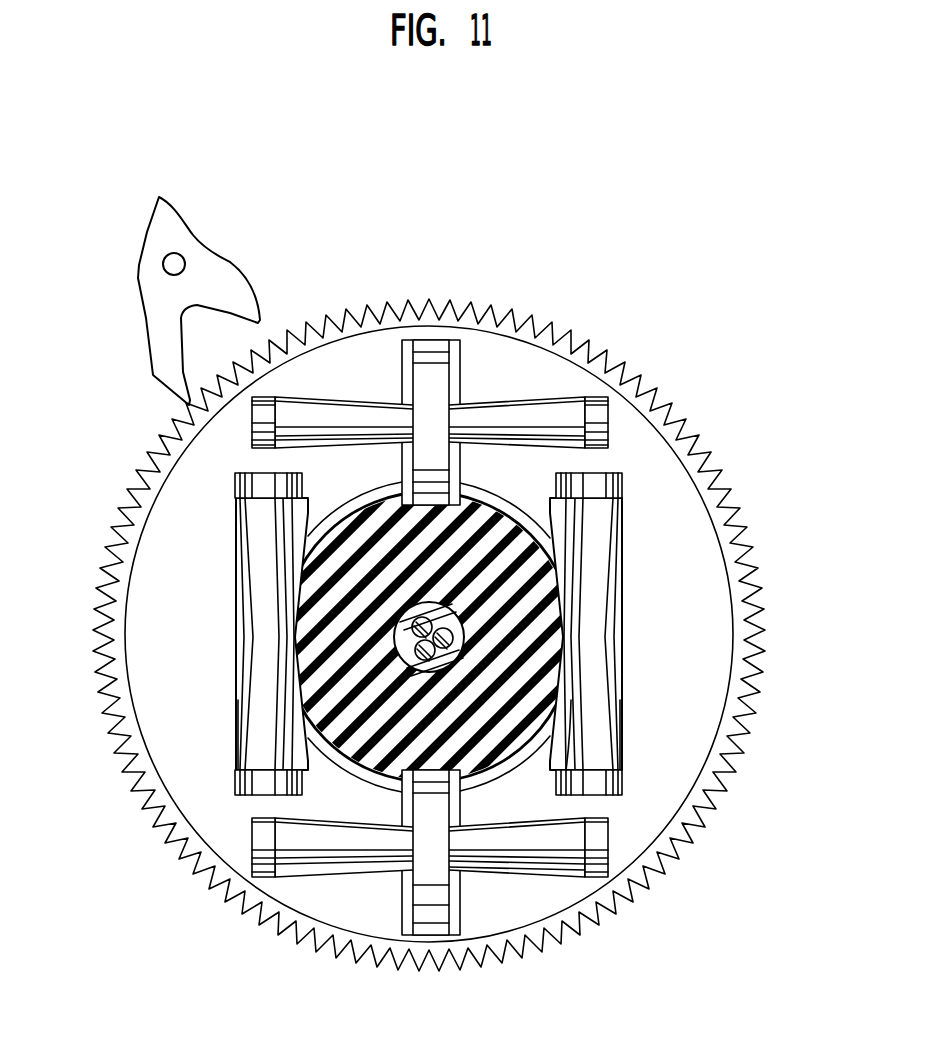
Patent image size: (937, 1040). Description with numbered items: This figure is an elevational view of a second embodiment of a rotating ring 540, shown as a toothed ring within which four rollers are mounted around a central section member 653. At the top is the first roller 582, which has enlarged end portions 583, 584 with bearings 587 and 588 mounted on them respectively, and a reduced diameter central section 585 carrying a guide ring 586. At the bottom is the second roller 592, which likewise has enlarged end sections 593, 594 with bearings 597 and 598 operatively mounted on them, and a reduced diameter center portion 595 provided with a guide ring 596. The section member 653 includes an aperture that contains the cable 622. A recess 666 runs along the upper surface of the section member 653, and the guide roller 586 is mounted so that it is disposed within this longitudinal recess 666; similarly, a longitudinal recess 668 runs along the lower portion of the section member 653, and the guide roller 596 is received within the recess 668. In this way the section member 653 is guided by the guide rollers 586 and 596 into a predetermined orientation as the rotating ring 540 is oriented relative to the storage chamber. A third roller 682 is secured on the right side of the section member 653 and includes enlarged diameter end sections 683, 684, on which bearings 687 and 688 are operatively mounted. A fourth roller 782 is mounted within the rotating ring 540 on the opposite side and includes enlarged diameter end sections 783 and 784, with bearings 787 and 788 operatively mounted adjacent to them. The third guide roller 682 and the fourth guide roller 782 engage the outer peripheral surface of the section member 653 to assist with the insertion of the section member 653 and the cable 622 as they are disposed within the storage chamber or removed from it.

The rotating ring 540 is at (715, 643).
The first roller 582 is at (504, 377).
The enlarged end portion 583 is at (671, 401).
The enlarged end portion 584 is at (296, 415).
The reduced diameter central section 585 is at (482, 416).
The guide ring 586 is at (443, 342).
The bearing 587 is at (608, 437).
The bearing 588 is at (265, 407).
The second roller 592 is at (287, 860).
The enlarged end section 593 is at (567, 856).
The enlarged end section 594 is at (416, 892).
The reduced diameter center portion 595 is at (463, 852).
The guide ring 596 is at (423, 920).
The bearing 597 is at (607, 866).
The bearing 598 is at (254, 867).
The cable 622 is at (462, 655).
The section member 653 is at (566, 750).
The recess 666 is at (458, 487).
The longitudinal recess 668 is at (447, 771).
The third roller 682 is at (689, 644).
The enlarged diameter end section 683 is at (612, 525).
The enlarged diameter end section 684 is at (608, 757).
The bearing 687 is at (621, 482).
The bearing 688 is at (618, 793).
The fourth roller 782 is at (162, 629).
The enlarged diameter end section 783 is at (250, 513).
The enlarged diameter end section 784 is at (243, 760).
The bearing 787 is at (242, 485).
The bearing 788 is at (247, 783).